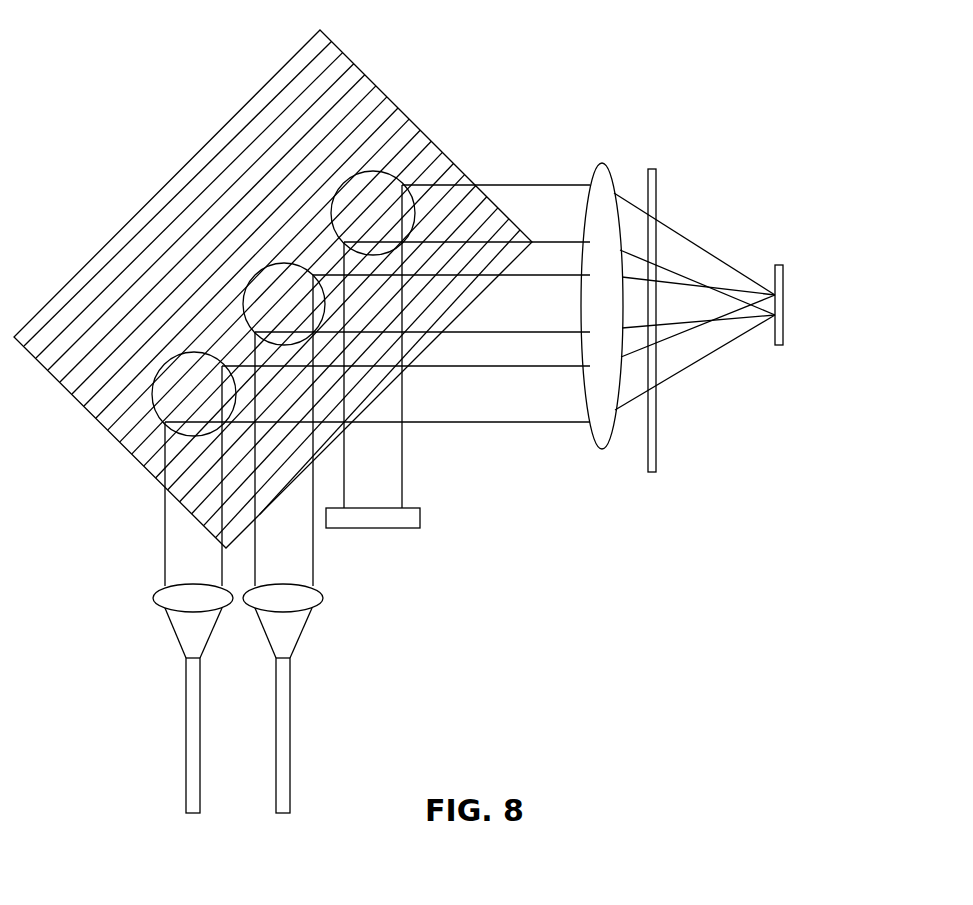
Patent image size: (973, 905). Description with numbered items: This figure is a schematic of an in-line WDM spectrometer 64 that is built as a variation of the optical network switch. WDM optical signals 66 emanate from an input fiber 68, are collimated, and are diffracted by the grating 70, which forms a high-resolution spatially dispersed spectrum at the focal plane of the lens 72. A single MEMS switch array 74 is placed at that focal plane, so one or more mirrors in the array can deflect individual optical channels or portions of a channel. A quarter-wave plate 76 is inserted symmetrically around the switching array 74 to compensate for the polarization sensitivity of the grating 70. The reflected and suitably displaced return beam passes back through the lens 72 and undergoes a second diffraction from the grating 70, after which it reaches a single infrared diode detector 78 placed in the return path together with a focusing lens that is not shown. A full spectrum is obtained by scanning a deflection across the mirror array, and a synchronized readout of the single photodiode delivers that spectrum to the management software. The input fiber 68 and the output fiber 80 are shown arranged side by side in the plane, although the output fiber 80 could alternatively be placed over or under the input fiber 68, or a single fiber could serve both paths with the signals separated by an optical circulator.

The in-line WDM spectrometer 64 is at (853, 92).
The WDM optical signals 66 is at (146, 561).
The input fiber 68 is at (192, 813).
The grating 70 is at (235, 115).
The lens 72 is at (602, 449).
The MEMS switch array 74 is at (784, 278).
The quarter-wave plate 76 is at (657, 190).
The infrared diode detector 78 is at (390, 528).
The output fiber 80 is at (282, 813).